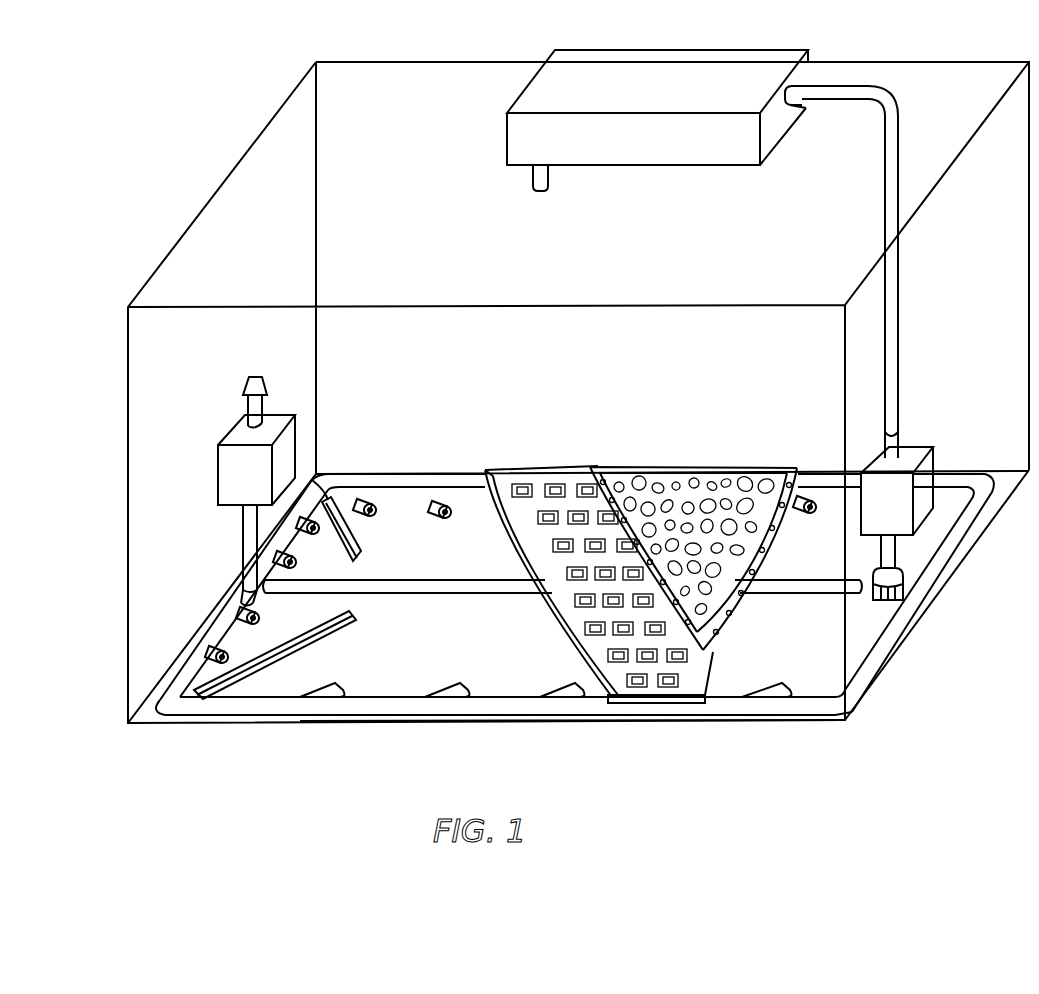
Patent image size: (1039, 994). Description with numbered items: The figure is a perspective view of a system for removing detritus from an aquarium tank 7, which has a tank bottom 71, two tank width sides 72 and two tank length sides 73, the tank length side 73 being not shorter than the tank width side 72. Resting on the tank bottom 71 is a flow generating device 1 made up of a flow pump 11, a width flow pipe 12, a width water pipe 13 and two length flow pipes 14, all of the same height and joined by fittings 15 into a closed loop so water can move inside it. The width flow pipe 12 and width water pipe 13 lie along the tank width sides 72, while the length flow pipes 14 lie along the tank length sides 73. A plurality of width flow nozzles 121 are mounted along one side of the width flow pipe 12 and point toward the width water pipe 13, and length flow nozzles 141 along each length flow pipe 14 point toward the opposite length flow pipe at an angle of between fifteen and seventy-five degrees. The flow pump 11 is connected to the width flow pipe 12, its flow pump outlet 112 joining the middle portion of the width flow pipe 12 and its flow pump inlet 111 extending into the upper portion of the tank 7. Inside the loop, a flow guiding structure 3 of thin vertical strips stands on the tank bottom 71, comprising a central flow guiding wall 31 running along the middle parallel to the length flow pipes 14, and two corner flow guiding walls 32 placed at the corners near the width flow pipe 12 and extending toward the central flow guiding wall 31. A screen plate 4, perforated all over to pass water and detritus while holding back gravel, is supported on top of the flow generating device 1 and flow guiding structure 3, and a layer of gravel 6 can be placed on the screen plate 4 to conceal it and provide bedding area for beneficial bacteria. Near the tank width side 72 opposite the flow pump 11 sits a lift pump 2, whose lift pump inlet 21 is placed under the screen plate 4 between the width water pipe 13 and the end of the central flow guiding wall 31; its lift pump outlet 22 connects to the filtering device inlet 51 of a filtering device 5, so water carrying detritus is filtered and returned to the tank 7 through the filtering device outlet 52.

The flow generating device 1 is at (252, 705).
The flow pump 11 is at (240, 478).
The flow pump inlet 111 is at (247, 384).
The flow pump outlet 112 is at (248, 538).
The width flow pipe 12 is at (198, 668).
The width flow nozzle 121 is at (200, 668).
The width water pipe 13 is at (945, 547).
The length flow pipe 14 is at (487, 697).
The length flow nozzle 141 is at (323, 693).
The fitting 15 is at (328, 493).
The lift pump 2 is at (908, 457).
The lift pump inlet 21 is at (908, 585).
The lift pump outlet 22 is at (890, 445).
The flow guiding structure 3 is at (377, 577).
The central flow guiding wall 31 is at (447, 585).
The corner flow guiding wall 32 is at (320, 641).
The screen plate 4 is at (650, 678).
The filtering device 5 is at (660, 68).
The filtering device inlet 51 is at (790, 97).
The filtering device outlet 52 is at (548, 181).
The gravel 6 is at (712, 470).
The aquarium tank 7 is at (226, 217).
The tank bottom 71 is at (745, 655).
The tank width side 72 is at (885, 665).
The tank length side 73 is at (418, 472).